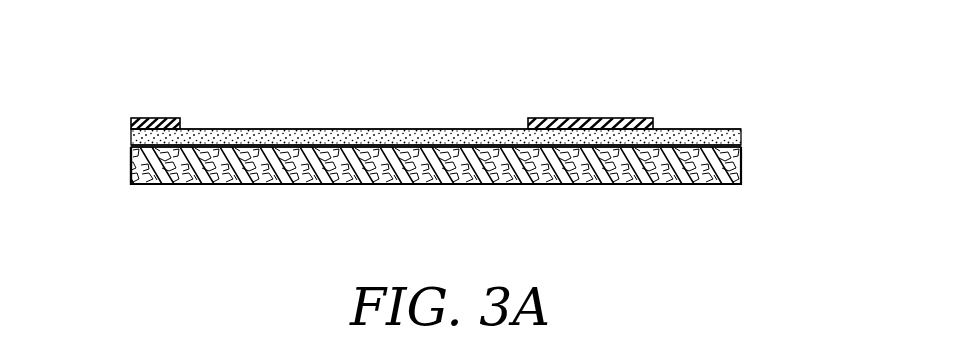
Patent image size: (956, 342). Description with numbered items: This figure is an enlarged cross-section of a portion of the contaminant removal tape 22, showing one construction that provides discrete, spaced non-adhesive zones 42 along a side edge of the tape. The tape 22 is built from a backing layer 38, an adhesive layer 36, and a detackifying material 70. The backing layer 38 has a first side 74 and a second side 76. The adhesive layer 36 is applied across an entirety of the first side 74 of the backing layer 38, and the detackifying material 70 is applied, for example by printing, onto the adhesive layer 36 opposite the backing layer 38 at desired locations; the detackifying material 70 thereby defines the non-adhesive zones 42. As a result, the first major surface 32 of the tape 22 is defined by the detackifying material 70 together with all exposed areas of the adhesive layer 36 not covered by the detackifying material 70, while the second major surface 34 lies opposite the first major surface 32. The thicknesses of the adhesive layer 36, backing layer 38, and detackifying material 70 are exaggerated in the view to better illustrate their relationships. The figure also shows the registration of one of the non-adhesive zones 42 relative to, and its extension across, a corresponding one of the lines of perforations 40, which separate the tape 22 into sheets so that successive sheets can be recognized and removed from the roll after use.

The contaminant removal tape 22 is at (416, 148).
The first major surface 32 is at (313, 78).
The second major surface 34 is at (308, 216).
The adhesive layer 36 is at (133, 138).
The backing layer 38 is at (170, 172).
The lines of perforations 40 is at (588, 178).
The non-adhesive zones 42 is at (147, 96).
The detackifying material 70 is at (168, 118).
The first side of backing layer 74 is at (702, 147).
The second side of backing layer 76 is at (672, 185).